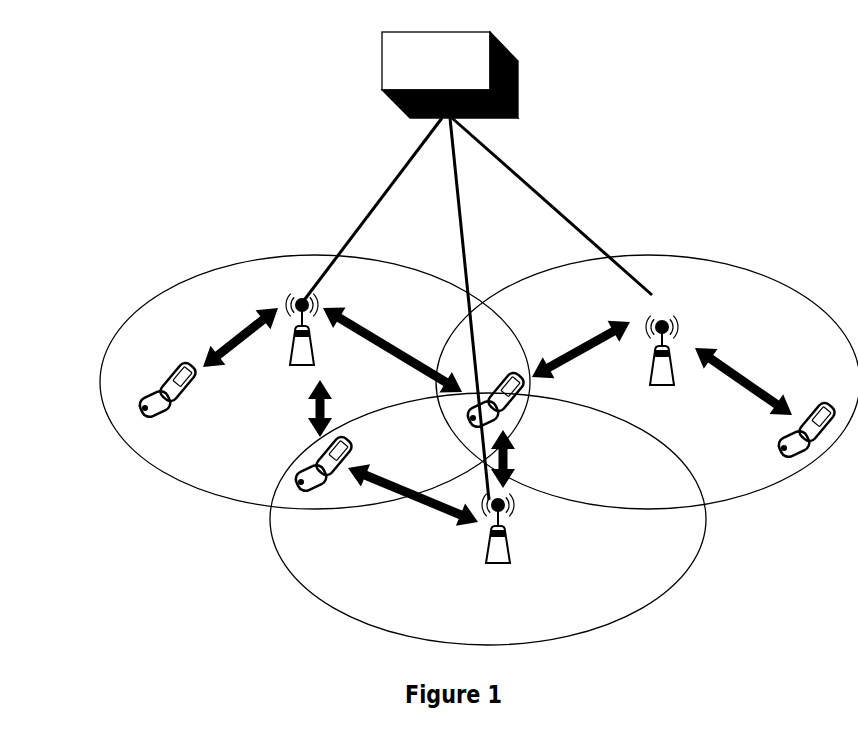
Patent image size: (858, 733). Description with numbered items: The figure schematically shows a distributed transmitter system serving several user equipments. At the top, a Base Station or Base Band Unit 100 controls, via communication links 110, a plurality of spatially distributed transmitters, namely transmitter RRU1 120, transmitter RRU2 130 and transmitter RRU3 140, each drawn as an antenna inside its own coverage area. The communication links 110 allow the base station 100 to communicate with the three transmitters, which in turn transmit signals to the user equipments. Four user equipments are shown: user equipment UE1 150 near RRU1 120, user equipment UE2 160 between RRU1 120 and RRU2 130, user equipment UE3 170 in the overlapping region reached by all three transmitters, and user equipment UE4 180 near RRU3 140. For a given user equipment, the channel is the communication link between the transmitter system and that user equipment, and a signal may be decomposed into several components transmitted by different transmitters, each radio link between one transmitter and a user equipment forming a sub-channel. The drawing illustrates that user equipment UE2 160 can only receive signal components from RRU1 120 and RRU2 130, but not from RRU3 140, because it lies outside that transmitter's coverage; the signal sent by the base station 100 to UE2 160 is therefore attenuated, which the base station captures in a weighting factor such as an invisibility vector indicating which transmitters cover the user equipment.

The Base Band Unit (BBU) 100 is at (382, 68).
The communication links 110 is at (403, 167).
The transmitter RRU1 120 is at (293, 277).
The transmitter RRU2 130 is at (512, 553).
The transmitter RRU3 140 is at (680, 303).
The user equipment UE1 150 is at (132, 395).
The user equipment UE2 160 is at (280, 487).
The user equipment UE3 170 is at (492, 358).
The user equipment UE4 180 is at (820, 400).